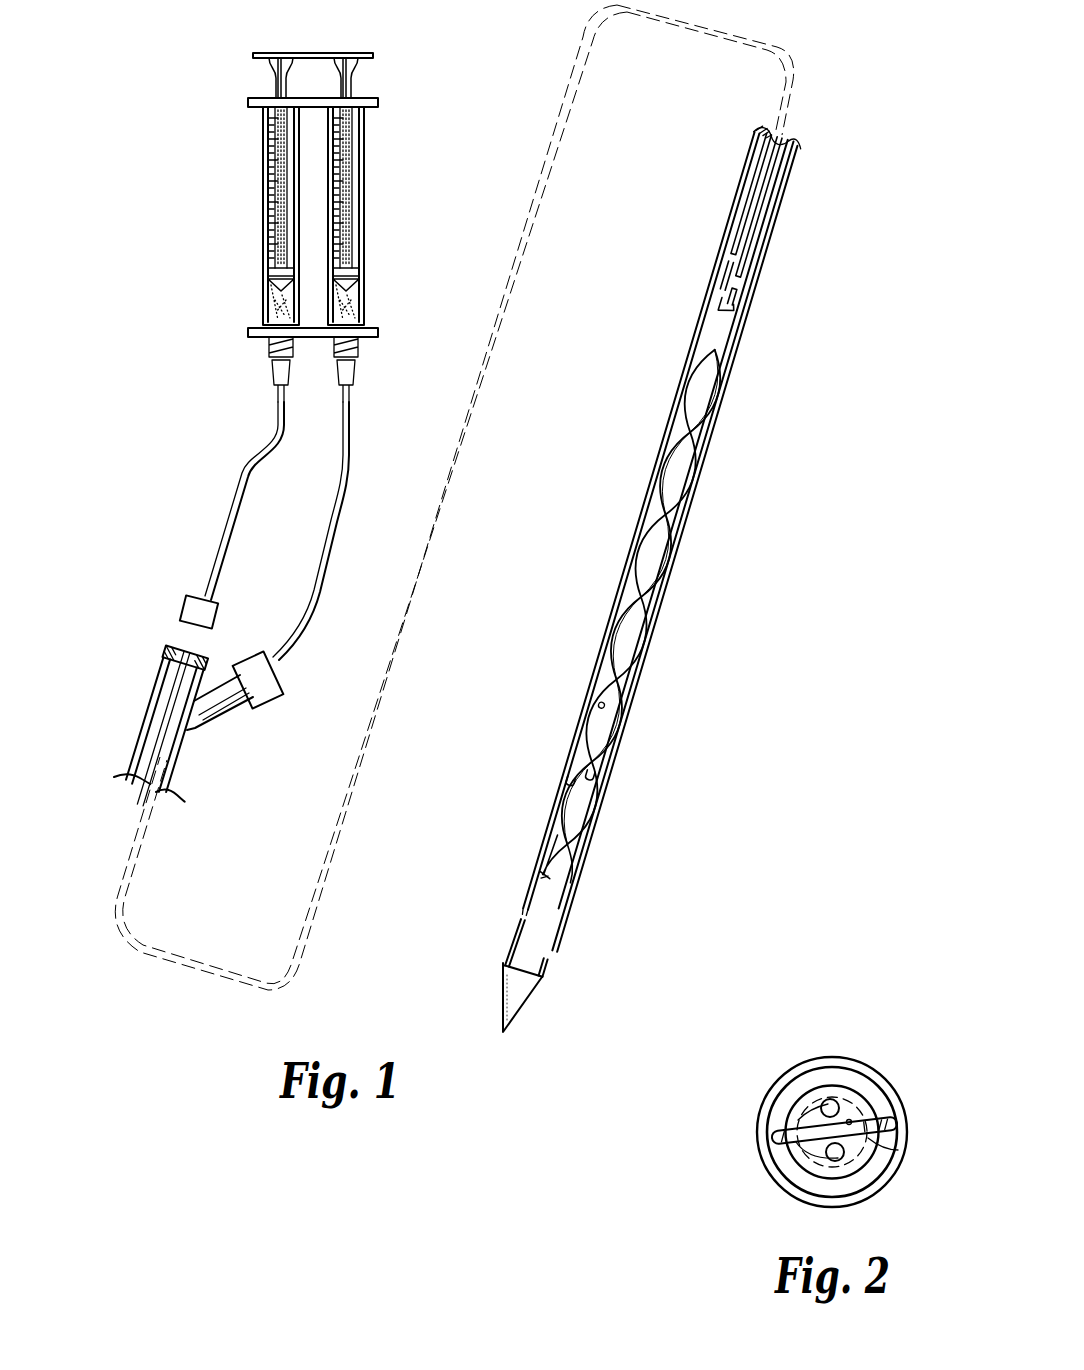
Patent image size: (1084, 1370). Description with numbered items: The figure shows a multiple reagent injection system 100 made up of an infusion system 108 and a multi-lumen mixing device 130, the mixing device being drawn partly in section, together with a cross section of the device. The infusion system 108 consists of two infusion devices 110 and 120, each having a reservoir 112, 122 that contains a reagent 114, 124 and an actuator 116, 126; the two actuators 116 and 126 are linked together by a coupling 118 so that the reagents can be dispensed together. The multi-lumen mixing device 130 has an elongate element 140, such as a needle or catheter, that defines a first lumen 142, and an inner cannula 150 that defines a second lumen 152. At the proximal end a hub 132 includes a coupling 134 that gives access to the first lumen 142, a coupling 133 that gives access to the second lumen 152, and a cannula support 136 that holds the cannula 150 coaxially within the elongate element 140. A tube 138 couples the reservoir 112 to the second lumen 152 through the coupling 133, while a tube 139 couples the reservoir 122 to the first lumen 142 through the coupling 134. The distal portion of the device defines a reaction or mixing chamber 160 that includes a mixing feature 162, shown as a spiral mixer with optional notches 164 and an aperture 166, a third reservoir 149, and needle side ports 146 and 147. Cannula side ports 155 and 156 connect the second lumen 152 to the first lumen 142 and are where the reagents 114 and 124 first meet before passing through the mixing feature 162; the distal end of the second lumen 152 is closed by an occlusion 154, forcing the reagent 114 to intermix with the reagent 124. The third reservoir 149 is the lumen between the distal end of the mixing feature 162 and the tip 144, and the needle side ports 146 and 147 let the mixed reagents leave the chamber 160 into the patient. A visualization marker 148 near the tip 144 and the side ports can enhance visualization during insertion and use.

In FIG. 1, the multiple reagent injection system 100 is at (286, 202).
In FIG. 1, the infusion system 108 is at (437, 85).
In FIG. 1, the infusion device 110 is at (272, 202).
In FIG. 1, the reservoir 112 is at (265, 245).
In FIG. 1, the reagent 114 is at (278, 305).
In FIG. 1, the actuator 116 is at (275, 85).
In FIG. 1, the coupling 118 is at (311, 53).
In FIG. 1, the infusion device 120 is at (415, 220).
In FIG. 1, the reservoir 122 is at (362, 207).
In FIG. 1, the reagent 124 is at (343, 300).
In FIG. 1, the actuator 126 is at (352, 80).
In FIG. 1, the multi-lumen mixing device 130 is at (629, 565).
In FIG. 1, the hub 132 is at (149, 711).
In FIG. 1, the coupling 133 is at (187, 598).
In FIG. 1, the coupling 134 is at (263, 708).
In FIG. 1, the cannula support 136 is at (172, 650).
In FIG. 1, the tube 138 is at (215, 553).
In FIG. 1, the tube 139 is at (321, 578).
In FIG. 1, the elongate element 140 is at (658, 538).
In FIG. 2, the elongate element 140 is at (783, 1072).
In FIG. 1, the first lumen 142 is at (673, 546).
In FIG. 2, the first lumen 142 is at (790, 1165).
In FIG. 1, the tip 144 is at (520, 1000).
In FIG. 1, the needle side port 146 is at (524, 911).
In FIG. 1, the needle side port 147 is at (523, 971).
In FIG. 1, the visualization marker 148 is at (532, 942).
In FIG. 1, the third reservoir 149 is at (545, 905).
In FIG. 1, the cannula 150 is at (745, 212).
In FIG. 2, the cannula 150 is at (802, 1175).
In FIG. 1, the lumen 152 is at (754, 221).
In FIG. 1, the occlusion 154 is at (727, 306).
In FIG. 2, the occlusion 154 is at (800, 1117).
In FIG. 1, the cannula side port 155 is at (726, 275).
In FIG. 2, the cannula side port 155 is at (835, 1104).
In FIG. 1, the cannula side port 156 is at (731, 296).
In FIG. 2, the cannula side port 156 is at (845, 1160).
In FIG. 1, the mixing chamber 160 is at (634, 614).
In FIG. 1, the mixing feature 162 is at (634, 615).
In FIG. 2, the mixing feature 162 is at (903, 1160).
In FIG. 1, the notches 164 is at (580, 778).
In FIG. 2, the notches 164 is at (892, 1125).
In FIG. 1, the aperture 166 is at (601, 704).
In FIG. 2, the aperture 166 is at (850, 1118).